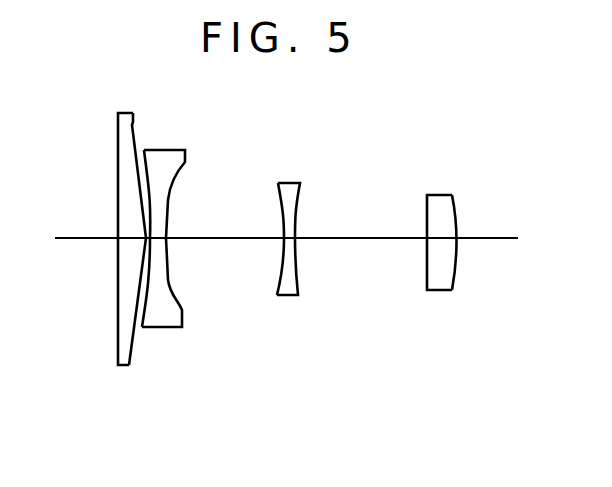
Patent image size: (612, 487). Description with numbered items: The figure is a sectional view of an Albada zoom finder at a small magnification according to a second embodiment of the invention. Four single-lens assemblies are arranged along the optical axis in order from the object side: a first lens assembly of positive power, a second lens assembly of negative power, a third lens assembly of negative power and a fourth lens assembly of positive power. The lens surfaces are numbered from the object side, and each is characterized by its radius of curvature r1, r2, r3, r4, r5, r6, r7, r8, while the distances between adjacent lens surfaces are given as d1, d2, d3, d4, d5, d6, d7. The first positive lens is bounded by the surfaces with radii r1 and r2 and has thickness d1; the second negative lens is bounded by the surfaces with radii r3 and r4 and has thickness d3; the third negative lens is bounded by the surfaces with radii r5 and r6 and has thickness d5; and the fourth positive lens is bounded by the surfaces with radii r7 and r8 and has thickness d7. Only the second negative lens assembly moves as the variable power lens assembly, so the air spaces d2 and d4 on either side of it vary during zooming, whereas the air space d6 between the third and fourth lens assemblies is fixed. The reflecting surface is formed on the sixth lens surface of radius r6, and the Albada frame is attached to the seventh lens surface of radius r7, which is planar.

The radius of curvature of first lens surface r1 is at (108, 189).
The radius of curvature of second lens surface r2 is at (137, 118).
The radius of curvature of third lens surface r3 is at (146, 149).
The radius of curvature of fourth lens surface r4 is at (168, 194).
The radius of curvature of fifth lens surface r5 is at (277, 210).
The radius of curvature of sixth lens surface r6 is at (306, 210).
The radius of curvature of seventh lens surface r7 is at (426, 225).
The radius of curvature of eighth lens surface r8 is at (458, 228).
The distance between first and second lens surfaces d1 is at (130, 244).
The distance between second and third lens surfaces d2 is at (141, 327).
The distance between third and fourth lens surfaces d3 is at (153, 243).
The distance between fourth and fifth lens surfaces d4 is at (237, 242).
The distance between fifth and sixth lens surfaces d5 is at (291, 242).
The distance between sixth and seventh lens surfaces d6 is at (365, 243).
The distance between seventh and eighth lens surfaces d7 is at (442, 242).